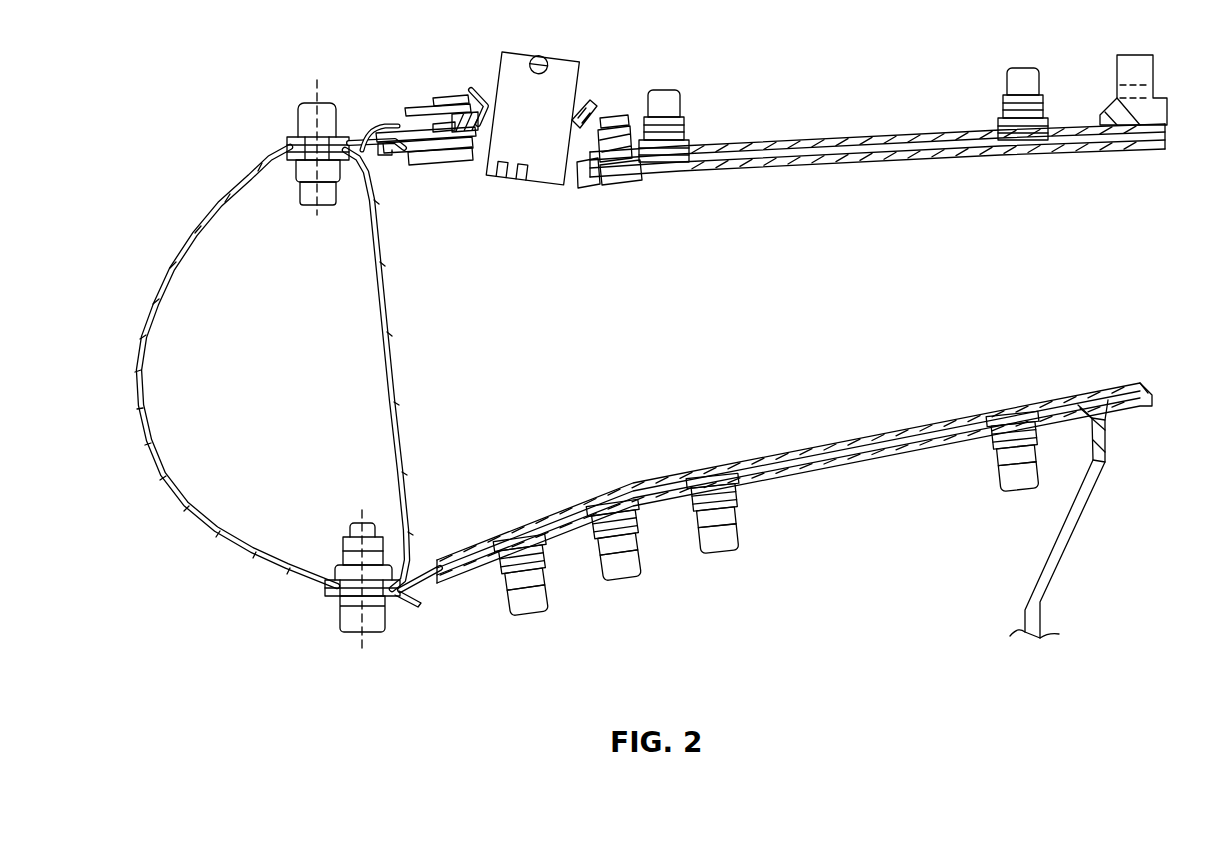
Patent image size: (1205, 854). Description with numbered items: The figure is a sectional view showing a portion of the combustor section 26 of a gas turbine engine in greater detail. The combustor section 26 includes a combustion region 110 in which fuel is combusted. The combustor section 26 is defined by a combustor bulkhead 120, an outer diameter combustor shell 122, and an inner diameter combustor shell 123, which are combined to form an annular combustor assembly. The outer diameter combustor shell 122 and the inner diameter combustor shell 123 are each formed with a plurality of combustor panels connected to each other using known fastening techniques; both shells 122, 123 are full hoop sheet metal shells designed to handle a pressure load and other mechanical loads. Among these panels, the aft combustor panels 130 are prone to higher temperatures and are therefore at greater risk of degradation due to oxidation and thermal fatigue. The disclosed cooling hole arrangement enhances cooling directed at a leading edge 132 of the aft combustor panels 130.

The combustor section 26 is at (863, 113).
The combustion region 110 is at (878, 300).
The combustor bulkhead 120 is at (176, 252).
The outer diameter combustor shell 122 is at (947, 130).
The inner diameter combustor shell 123 is at (820, 468).
The aft combustor panels 130 is at (634, 148).
The leading edge 132 is at (593, 113).